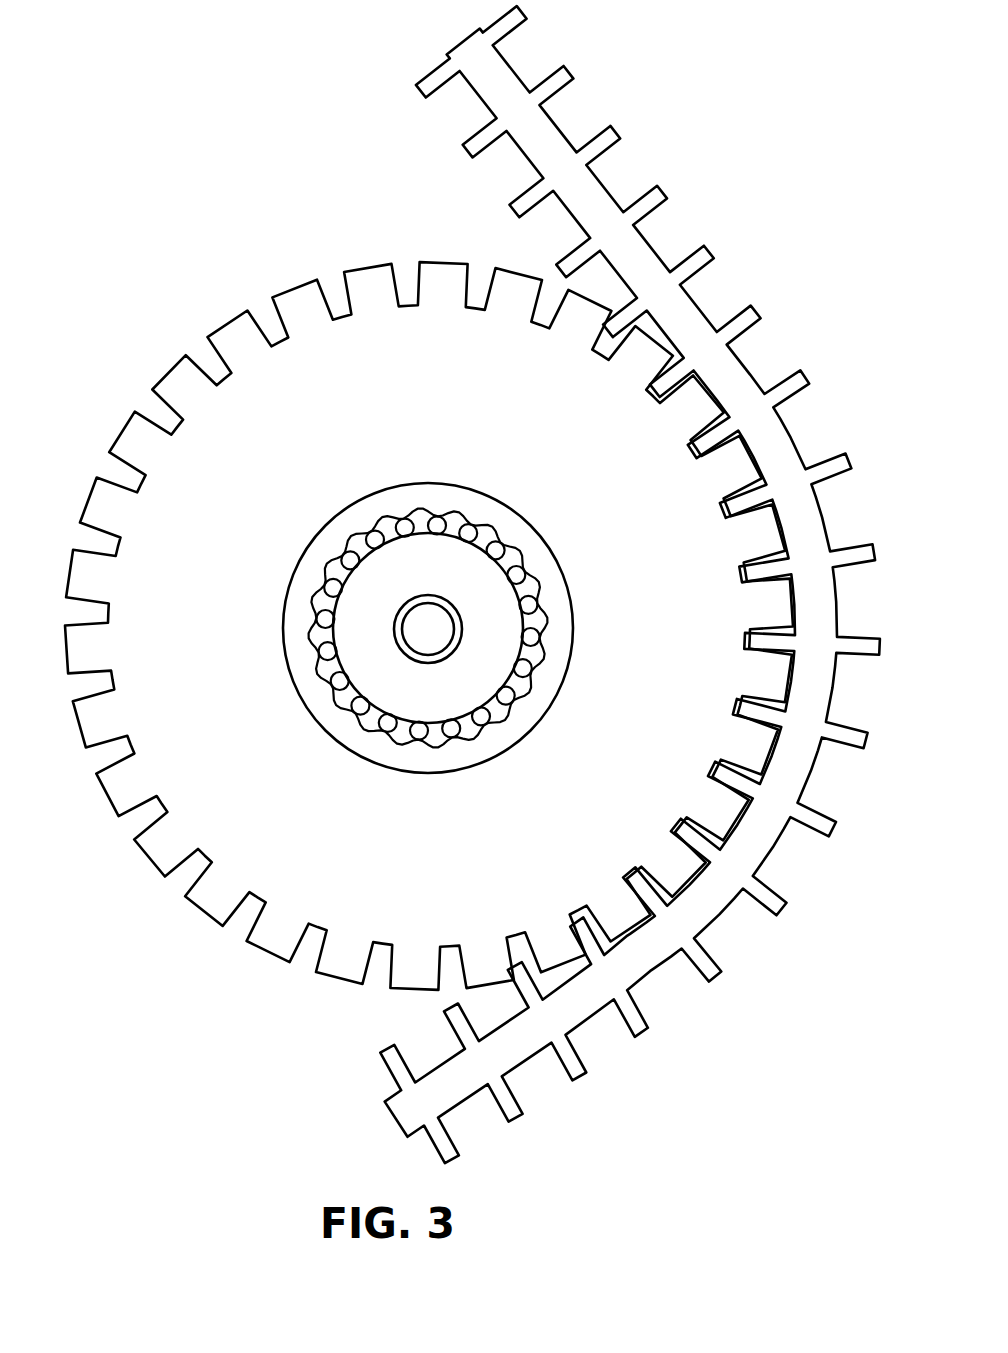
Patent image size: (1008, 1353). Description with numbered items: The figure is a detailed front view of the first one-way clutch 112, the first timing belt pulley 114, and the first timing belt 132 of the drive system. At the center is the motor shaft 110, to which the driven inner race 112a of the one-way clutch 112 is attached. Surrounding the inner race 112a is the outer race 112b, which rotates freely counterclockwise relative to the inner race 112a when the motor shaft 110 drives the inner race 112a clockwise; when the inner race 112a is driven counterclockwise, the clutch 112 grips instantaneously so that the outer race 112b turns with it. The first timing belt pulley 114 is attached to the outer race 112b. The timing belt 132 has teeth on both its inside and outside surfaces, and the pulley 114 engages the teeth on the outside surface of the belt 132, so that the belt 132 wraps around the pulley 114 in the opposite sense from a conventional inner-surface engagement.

The motor shaft 110 is at (422, 595).
The first one-way clutch 112 is at (466, 630).
The inner race 112a is at (371, 718).
The outer race 112b is at (568, 585).
The first timing belt pulley 114 is at (279, 339).
The first timing belt 132 is at (561, 124).